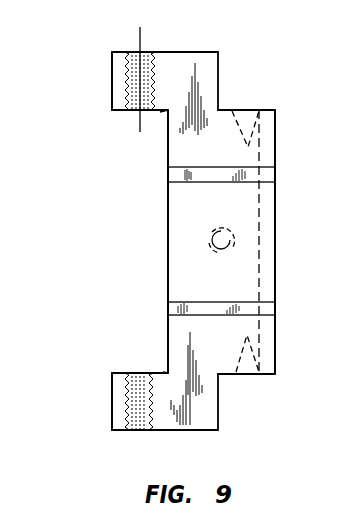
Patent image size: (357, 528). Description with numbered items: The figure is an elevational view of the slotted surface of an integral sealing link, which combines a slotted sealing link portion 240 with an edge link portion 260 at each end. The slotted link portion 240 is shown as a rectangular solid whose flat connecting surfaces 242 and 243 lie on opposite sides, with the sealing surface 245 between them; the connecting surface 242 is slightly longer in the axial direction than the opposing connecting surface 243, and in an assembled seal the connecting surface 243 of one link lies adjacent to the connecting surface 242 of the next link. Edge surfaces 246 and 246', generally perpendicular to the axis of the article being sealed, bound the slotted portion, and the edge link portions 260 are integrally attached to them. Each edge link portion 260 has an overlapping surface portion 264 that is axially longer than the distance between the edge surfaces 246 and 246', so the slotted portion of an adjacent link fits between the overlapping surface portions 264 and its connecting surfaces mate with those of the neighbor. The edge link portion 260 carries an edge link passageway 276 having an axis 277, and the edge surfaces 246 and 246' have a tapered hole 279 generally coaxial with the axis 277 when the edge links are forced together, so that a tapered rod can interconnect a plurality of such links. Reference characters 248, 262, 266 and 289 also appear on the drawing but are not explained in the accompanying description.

The slotted sealing link portion 240 is at (277, 281).
The connecting surface 242 is at (168, 220).
The connecting surface 243 is at (276, 242).
The sealing surface 245 is at (263, 210).
The edge surface 246 is at (269, 94).
The edge surface 246' is at (269, 388).
The seal ring 248 is at (266, 172).
The edge link portion 260 is at (110, 79).
The threaded portion 262 is at (122, 110).
The overlapping surface portion 264 is at (160, 112).
The end face 266 is at (200, 52).
The edge link passageway 276 is at (117, 52).
The axis 277 is at (140, 33).
The tapered hole 279 is at (240, 112).
The port 289 is at (218, 250).